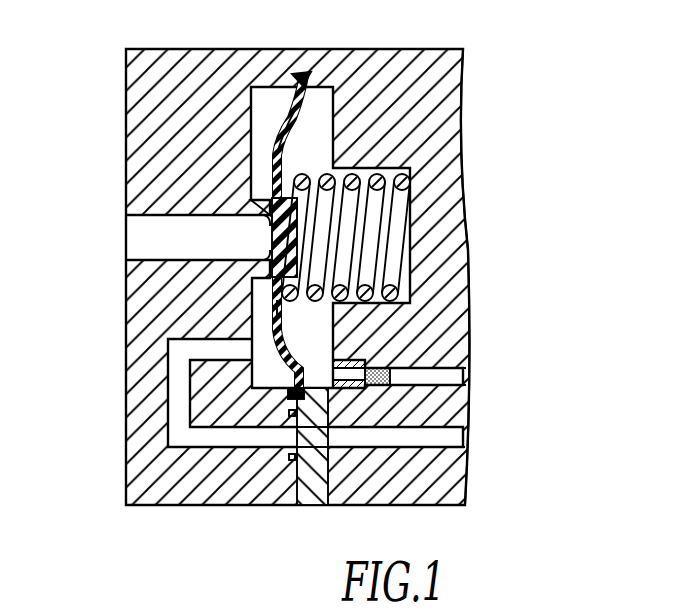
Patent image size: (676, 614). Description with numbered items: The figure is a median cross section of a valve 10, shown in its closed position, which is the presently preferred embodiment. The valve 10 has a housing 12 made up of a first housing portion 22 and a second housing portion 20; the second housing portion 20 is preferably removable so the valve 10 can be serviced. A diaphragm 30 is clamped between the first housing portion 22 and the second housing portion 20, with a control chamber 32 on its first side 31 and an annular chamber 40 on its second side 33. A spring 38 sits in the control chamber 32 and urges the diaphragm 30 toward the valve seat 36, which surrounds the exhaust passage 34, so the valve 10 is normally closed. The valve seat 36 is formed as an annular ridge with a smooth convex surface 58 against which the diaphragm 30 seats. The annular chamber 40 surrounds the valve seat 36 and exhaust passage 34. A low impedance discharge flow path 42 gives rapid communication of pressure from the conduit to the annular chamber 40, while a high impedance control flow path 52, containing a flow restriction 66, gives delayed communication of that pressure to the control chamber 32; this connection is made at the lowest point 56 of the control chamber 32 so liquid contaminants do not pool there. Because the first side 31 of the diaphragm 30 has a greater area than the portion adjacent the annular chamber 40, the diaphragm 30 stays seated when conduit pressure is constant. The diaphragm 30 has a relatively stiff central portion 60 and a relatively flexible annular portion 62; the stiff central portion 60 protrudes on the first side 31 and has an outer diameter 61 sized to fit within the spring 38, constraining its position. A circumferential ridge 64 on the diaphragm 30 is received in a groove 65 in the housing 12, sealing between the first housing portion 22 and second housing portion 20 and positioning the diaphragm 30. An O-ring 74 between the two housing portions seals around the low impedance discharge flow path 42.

The valve 10 is at (97, 97).
The housing 12 is at (291, 194).
The second housing portion 20 is at (197, 52).
The first housing portion 22 is at (428, 55).
The diaphragm 30 is at (292, 113).
The first side 31 is at (300, 207).
The control chamber 32 is at (328, 128).
The second side 33 is at (263, 240).
The exhaust passage 34 is at (148, 230).
The valve seat 36 is at (262, 271).
The spring 38 is at (395, 250).
The annular chamber 40 is at (255, 118).
The low impedance discharge flow path 42 is at (440, 437).
The high impedance control flow path 52 is at (440, 375).
The lowest point 56 is at (330, 388).
The smooth convex surface 58 is at (268, 228).
The stiff central portion 60 is at (302, 263).
The outer diameter 61 is at (298, 302).
The flexible annular portion 62 is at (273, 347).
The circumferential ridge 64 is at (300, 78).
The groove 65 is at (292, 395).
The flow restriction 66 is at (352, 392).
The O-ring 74 is at (292, 458).